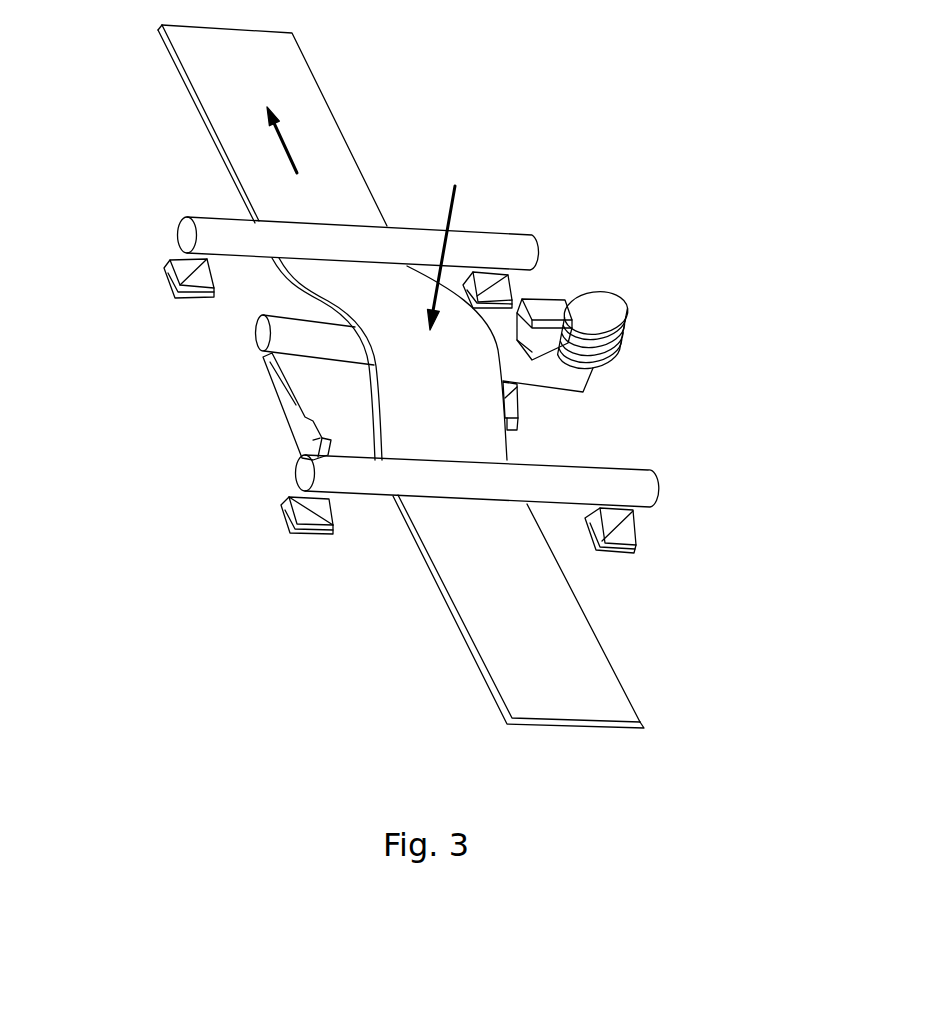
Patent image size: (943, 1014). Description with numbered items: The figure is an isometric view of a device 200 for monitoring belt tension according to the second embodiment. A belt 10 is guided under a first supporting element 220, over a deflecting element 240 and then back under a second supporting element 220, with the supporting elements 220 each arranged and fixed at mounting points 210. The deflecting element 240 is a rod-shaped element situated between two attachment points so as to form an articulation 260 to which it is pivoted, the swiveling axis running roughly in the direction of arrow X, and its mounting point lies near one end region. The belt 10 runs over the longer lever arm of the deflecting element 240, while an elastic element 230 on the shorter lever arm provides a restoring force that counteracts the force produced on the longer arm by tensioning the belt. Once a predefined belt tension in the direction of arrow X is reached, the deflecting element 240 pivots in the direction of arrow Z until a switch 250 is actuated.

The belt 10 is at (284, 90).
The device 200 is at (660, 160).
The mounting points 210 is at (175, 270).
The supporting element 220 is at (351, 240).
The elastic element 230 is at (617, 362).
The deflecting element 240 is at (284, 330).
The switch 250 is at (293, 412).
The articulation 260 is at (547, 304).